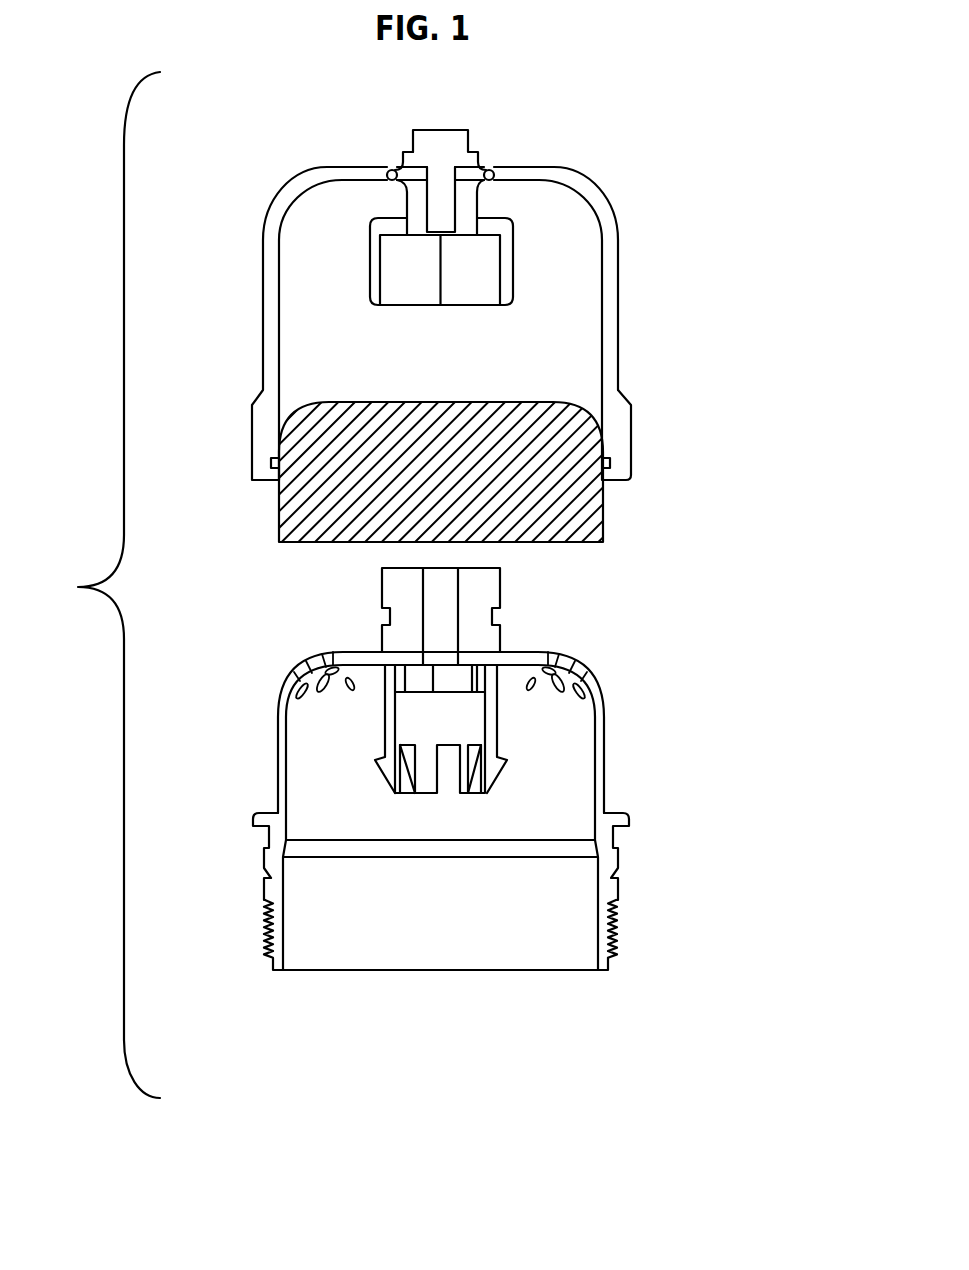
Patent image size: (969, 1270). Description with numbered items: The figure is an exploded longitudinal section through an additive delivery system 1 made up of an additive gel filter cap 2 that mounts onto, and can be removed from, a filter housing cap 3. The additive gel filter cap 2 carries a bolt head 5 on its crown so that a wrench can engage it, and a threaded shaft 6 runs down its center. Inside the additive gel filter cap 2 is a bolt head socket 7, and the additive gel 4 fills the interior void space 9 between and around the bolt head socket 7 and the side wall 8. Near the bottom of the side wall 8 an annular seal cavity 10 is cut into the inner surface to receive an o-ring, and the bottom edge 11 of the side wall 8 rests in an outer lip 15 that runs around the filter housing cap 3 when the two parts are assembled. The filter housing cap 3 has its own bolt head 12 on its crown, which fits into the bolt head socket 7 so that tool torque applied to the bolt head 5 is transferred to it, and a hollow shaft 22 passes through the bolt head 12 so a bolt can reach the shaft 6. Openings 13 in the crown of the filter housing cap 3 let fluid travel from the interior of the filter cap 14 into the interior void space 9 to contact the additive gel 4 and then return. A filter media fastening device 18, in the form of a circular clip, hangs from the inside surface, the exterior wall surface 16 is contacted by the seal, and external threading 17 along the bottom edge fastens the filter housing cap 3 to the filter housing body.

The additive delivery system 1 is at (99, 585).
The additive gel filter cap 2 is at (714, 222).
The filter housing cap 3 is at (757, 768).
The additive gel 4 is at (318, 430).
The bolt head 5 is at (452, 148).
The shaft 6 is at (440, 193).
The bolt head socket 7 is at (477, 260).
The side wall 8 is at (288, 193).
The interior void space 9 is at (333, 320).
The seal cavity 10 is at (613, 457).
The bottom edge 11 is at (619, 492).
The bolt head 12 is at (472, 597).
The openings 13 is at (385, 685).
The interior of the filter cap 14 is at (542, 807).
The outer lip 15 is at (258, 833).
The exterior wall surface 16 is at (270, 793).
The external threading 17 is at (622, 918).
The filter media fastening device 18 is at (452, 725).
The hollow shaft 22 is at (443, 632).